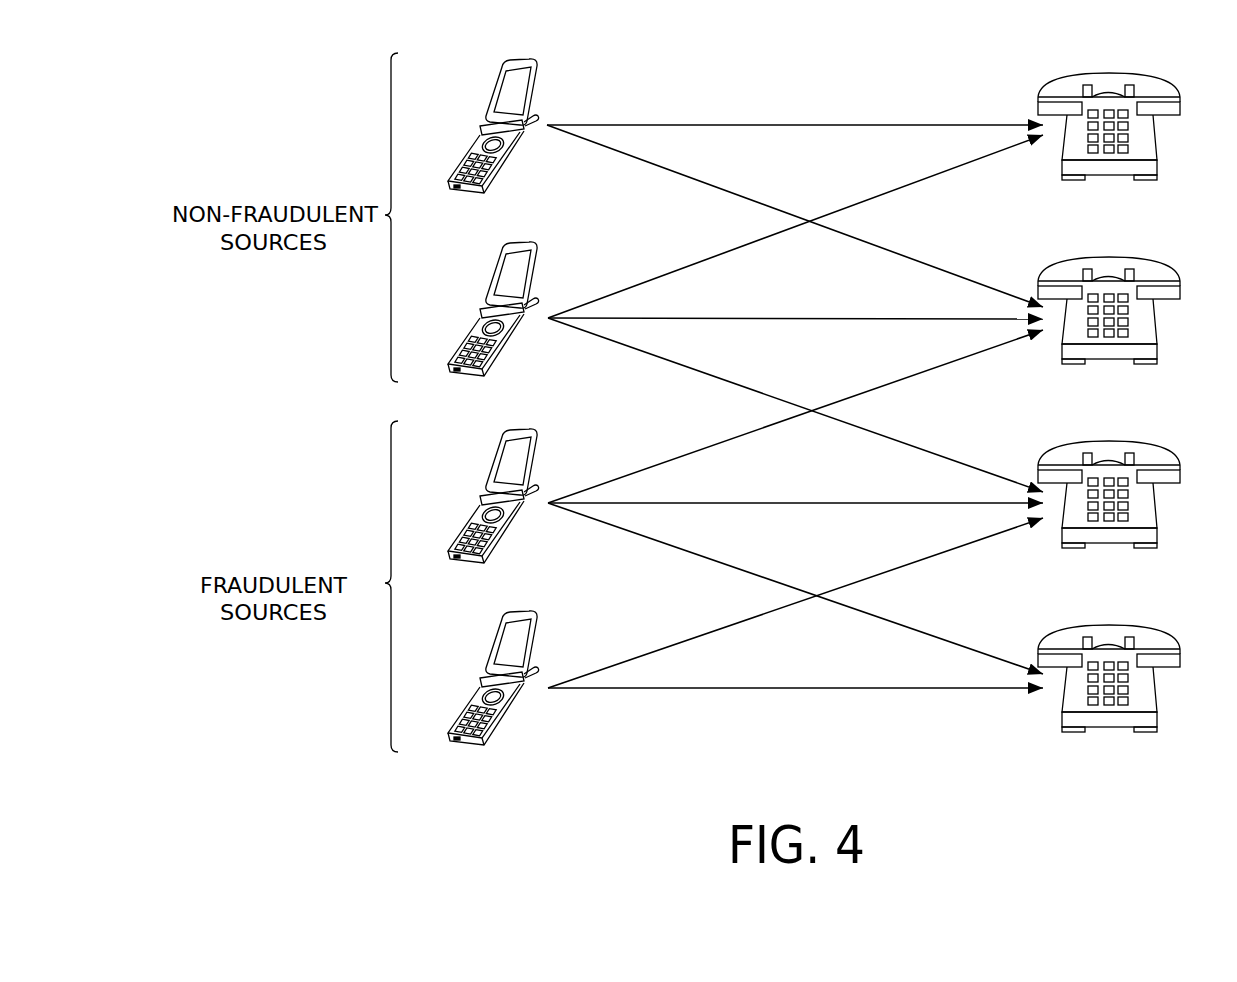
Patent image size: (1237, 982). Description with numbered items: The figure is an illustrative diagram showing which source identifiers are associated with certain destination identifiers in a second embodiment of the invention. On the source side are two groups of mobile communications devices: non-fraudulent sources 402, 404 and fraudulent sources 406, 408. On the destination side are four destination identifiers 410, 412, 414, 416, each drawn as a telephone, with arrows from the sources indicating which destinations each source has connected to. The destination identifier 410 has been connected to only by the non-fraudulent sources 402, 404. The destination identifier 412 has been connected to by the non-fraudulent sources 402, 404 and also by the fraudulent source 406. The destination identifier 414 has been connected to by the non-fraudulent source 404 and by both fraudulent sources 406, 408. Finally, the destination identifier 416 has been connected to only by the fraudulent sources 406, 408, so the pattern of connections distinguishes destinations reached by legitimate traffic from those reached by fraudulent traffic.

The non-fraudulent source 402 is at (492, 87).
The non-fraudulent source 404 is at (492, 270).
The fraudulent source 406 is at (492, 457).
The fraudulent source 408 is at (492, 639).
The destination identifier 410 is at (1153, 135).
The destination identifier 412 is at (1153, 319).
The destination identifier 414 is at (1153, 503).
The destination identifier 416 is at (1153, 687).